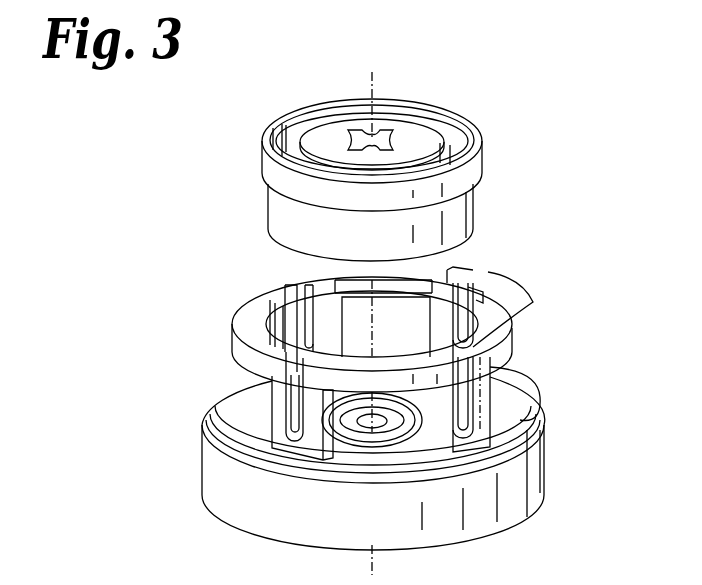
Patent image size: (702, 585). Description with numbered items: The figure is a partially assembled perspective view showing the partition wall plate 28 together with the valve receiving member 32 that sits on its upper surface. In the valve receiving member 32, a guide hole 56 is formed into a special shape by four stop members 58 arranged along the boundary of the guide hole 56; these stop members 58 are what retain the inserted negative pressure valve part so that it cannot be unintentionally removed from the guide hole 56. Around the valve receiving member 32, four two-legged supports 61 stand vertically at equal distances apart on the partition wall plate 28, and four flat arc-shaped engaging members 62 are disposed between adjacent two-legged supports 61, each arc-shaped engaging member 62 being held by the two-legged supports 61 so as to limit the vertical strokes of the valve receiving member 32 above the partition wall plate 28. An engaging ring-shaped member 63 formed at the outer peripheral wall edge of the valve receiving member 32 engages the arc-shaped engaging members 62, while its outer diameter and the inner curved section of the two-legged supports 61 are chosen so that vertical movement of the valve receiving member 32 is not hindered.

The partition wall plate 28 is at (528, 475).
The valve receiving member 32 is at (472, 213).
The guide hole 56 is at (381, 130).
The stop member 58 is at (440, 141).
The two-legged support 61 is at (318, 283).
The arc-shaped engaging member 62 is at (248, 310).
The engaging ring-shaped member 63 is at (265, 133).